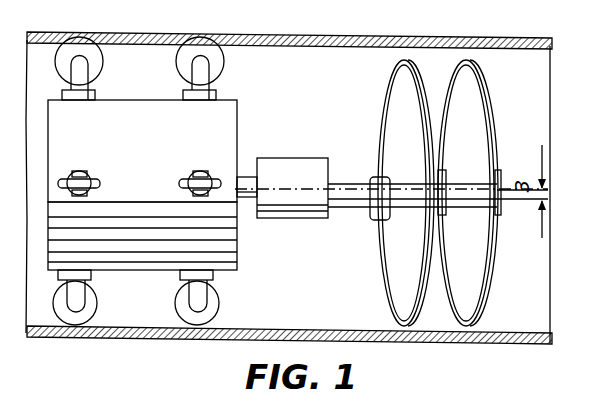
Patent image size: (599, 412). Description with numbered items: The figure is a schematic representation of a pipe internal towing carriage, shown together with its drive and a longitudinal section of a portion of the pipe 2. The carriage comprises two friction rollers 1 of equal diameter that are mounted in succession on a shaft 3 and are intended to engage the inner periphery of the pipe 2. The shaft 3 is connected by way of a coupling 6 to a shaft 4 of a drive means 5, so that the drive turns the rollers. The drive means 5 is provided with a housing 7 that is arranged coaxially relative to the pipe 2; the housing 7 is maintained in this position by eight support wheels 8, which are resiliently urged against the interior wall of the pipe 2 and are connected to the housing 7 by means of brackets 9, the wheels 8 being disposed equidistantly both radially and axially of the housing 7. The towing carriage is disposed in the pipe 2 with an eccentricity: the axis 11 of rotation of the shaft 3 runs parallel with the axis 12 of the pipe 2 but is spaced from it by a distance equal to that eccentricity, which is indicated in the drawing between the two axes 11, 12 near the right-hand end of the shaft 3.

The friction rollers 1 is at (414, 304).
The pipe 2 is at (505, 48).
The shaft 3 is at (380, 180).
The shaft of drive means 4 is at (245, 197).
The drive means 5 is at (240, 257).
The coupling 6 is at (288, 172).
The housing 7 is at (223, 132).
The support wheels 8 is at (90, 306).
The brackets 9 is at (78, 97).
The axis of rotation of the shaft 11 is at (503, 188).
The axis of the pipe 12 is at (513, 202).